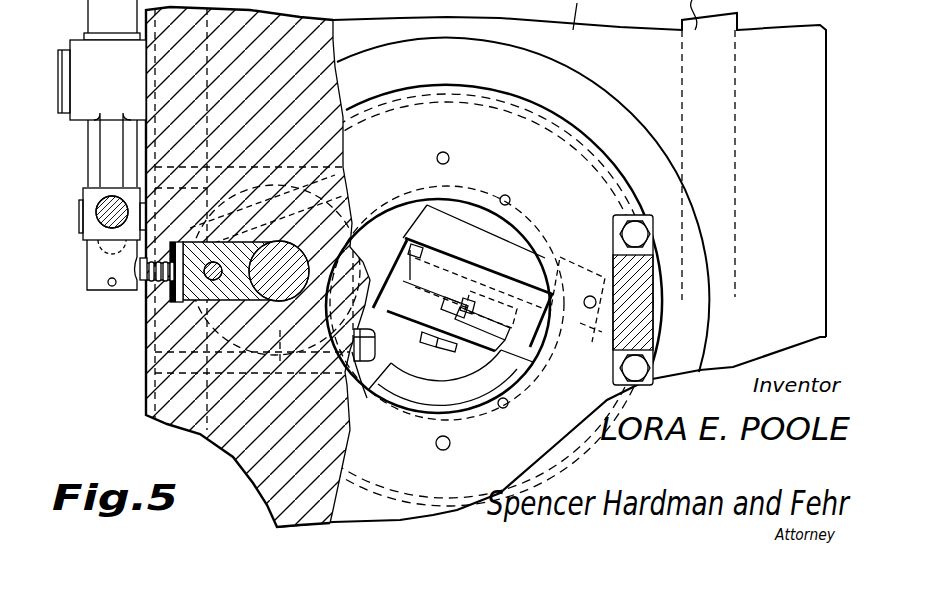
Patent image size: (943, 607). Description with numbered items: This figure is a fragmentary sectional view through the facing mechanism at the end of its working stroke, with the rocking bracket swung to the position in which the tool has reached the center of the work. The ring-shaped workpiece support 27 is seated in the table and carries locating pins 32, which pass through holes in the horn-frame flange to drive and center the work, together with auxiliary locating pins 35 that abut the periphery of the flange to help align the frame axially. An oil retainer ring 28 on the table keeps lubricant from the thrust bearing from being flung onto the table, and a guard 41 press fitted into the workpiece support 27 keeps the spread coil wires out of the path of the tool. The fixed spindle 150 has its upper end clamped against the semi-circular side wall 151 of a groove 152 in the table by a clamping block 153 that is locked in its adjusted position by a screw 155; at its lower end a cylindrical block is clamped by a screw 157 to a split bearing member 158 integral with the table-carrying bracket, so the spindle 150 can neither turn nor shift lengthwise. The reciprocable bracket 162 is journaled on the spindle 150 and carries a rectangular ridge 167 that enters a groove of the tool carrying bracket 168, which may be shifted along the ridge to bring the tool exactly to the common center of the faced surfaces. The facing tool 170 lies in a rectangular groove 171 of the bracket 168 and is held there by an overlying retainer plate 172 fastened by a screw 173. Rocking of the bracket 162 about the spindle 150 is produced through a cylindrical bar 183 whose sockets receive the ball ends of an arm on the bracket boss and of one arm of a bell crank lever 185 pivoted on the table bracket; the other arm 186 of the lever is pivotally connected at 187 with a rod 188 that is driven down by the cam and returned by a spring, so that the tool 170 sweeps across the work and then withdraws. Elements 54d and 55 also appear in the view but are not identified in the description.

The workpiece support 27 is at (500, 110).
The oil retainer ring 28 is at (590, 100).
The locating pins 32 is at (508, 196).
The auxiliary locating pins 35 is at (444, 152).
The guard 41 is at (423, 395).
The bearing block 54d is at (623, 263).
The bolt 55 is at (628, 232).
The spindle 150 is at (282, 257).
The semi-circular side wall 151 is at (350, 207).
The groove 152 is at (172, 290).
The clamping block 153 is at (205, 295).
The screw 155 is at (215, 262).
The screw 157 is at (375, 334).
The split bearing member 158 is at (372, 384).
The reciprocable bracket 162 is at (497, 237).
The rectangular ridge 167 is at (419, 247).
The tool carrying bracket 168 is at (515, 290).
The facing tool 170 is at (453, 297).
The rectangular groove 171 is at (470, 296).
The retainer plate 172 is at (413, 312).
The screw 173 is at (436, 346).
The cylindrical bar 183 is at (97, 13).
The bell crank lever 185 is at (83, 52).
The arm 186 is at (113, 140).
The pivotal connection 187 is at (83, 215).
The rod 188 is at (108, 203).